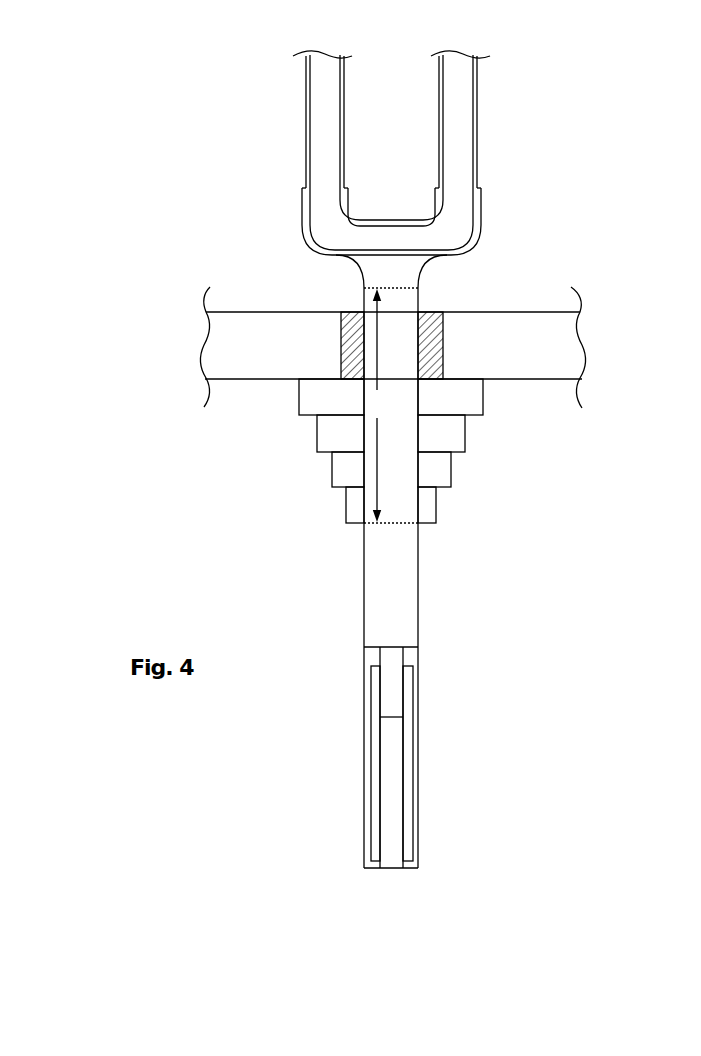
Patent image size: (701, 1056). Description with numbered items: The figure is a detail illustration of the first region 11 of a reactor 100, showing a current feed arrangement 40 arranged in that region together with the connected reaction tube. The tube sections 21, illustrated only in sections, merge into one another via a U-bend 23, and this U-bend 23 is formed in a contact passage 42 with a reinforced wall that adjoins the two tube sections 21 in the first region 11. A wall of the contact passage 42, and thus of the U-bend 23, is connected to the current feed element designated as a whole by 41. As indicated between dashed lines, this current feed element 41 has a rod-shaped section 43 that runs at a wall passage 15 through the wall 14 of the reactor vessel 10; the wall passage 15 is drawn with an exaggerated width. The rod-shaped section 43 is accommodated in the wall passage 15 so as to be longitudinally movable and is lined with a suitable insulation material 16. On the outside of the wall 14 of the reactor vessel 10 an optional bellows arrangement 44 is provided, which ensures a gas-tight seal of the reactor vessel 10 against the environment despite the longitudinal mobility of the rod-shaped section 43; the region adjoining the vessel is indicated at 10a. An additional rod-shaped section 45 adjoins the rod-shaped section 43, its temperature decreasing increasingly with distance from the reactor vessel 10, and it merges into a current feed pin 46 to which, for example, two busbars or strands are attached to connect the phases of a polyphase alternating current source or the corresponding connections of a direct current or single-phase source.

The reactor 100 is at (192, 44).
The first region 11 is at (176, 148).
The reactor vessel 10 is at (235, 270).
The wall 14 is at (228, 342).
The wall passage 15 is at (362, 332).
The insulation material 16 is at (420, 332).
The tube sections 21 is at (307, 167).
The U-bend 23 is at (402, 236).
The current feed arrangement 40 is at (458, 270).
The current feed element 41 is at (352, 294).
The contact passage 42 is at (302, 230).
The rod-shaped section 43 is at (391, 406).
The bellows arrangement 44 is at (320, 452).
The additional rod-shaped section 45 is at (377, 582).
The current feed pin 46 is at (388, 697).
The housing opening 10a is at (483, 398).